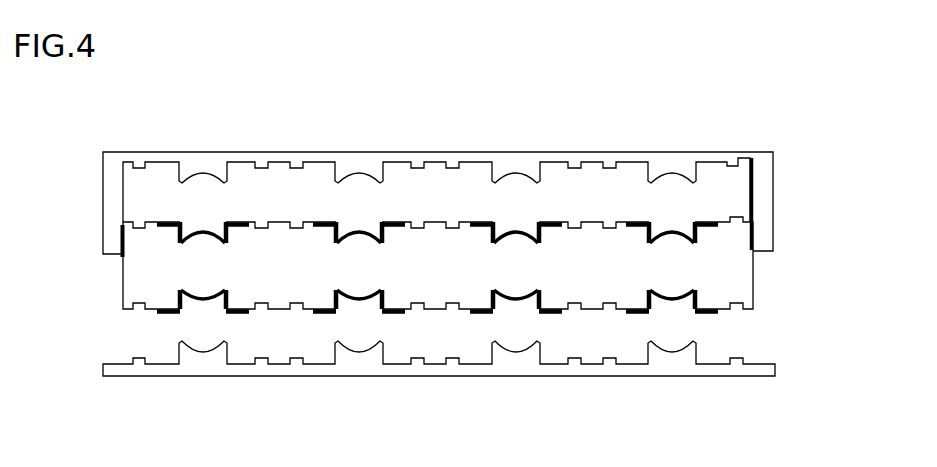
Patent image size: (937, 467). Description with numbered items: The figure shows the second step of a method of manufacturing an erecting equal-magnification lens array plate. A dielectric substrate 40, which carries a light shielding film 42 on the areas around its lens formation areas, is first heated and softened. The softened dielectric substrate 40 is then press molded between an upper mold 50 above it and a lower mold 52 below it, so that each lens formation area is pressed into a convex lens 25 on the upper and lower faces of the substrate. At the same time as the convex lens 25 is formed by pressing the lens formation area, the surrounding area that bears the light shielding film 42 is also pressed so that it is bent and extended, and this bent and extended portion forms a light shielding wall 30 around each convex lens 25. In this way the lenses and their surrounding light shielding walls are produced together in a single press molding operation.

The convex lens 25 is at (670, 231).
The light shielding wall 30 is at (656, 221).
The light shielding film 42 is at (699, 222).
The dielectric substrate 40 is at (753, 263).
The upper mold 50 is at (773, 196).
The lower mold 52 is at (775, 367).